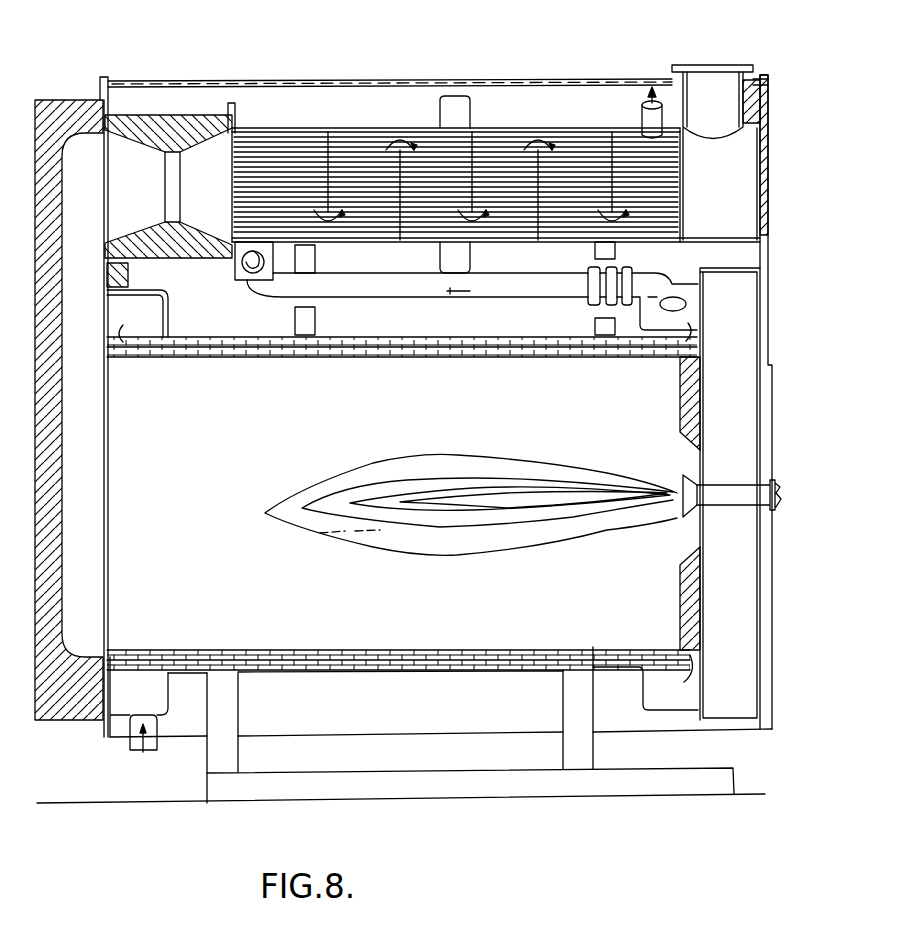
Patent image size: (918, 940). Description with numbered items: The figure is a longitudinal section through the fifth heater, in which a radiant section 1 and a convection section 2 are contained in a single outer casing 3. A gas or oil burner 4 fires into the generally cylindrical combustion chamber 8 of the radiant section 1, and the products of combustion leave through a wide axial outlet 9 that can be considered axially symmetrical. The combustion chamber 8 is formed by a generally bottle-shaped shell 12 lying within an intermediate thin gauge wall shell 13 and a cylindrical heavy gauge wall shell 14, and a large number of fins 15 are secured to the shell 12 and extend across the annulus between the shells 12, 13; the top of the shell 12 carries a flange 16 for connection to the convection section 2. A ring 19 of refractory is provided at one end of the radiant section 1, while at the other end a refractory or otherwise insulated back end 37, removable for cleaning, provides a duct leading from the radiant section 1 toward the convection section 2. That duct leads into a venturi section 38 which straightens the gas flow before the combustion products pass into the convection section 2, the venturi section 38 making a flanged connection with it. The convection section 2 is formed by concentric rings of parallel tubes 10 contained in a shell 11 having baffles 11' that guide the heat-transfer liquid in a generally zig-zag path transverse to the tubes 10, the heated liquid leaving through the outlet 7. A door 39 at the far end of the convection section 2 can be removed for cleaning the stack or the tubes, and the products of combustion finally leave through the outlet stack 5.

The radiant section 1 is at (318, 676).
The convection section 2 is at (422, 115).
The outer casing 3 is at (140, 80).
The burner 4 is at (733, 507).
The outlet stack 5 is at (733, 77).
The outlet 7 is at (645, 104).
The combustion chamber 8 is at (392, 437).
The axial outlet 9 is at (105, 452).
The tubes 10 is at (496, 136).
The shell 11 is at (421, 128).
The baffles 11' is at (471, 117).
The bottle-shaped shell 12 is at (397, 652).
The intermediate thin gauge wall shell 13 is at (420, 672).
The cylindrical heavy gauge wall shell 14 is at (365, 672).
The fins 15 is at (474, 660).
The flange 16 is at (150, 744).
The refractory ring 19 is at (678, 400).
The back end 37 is at (65, 688).
The venturi section 38 is at (190, 113).
The door 39 is at (756, 192).